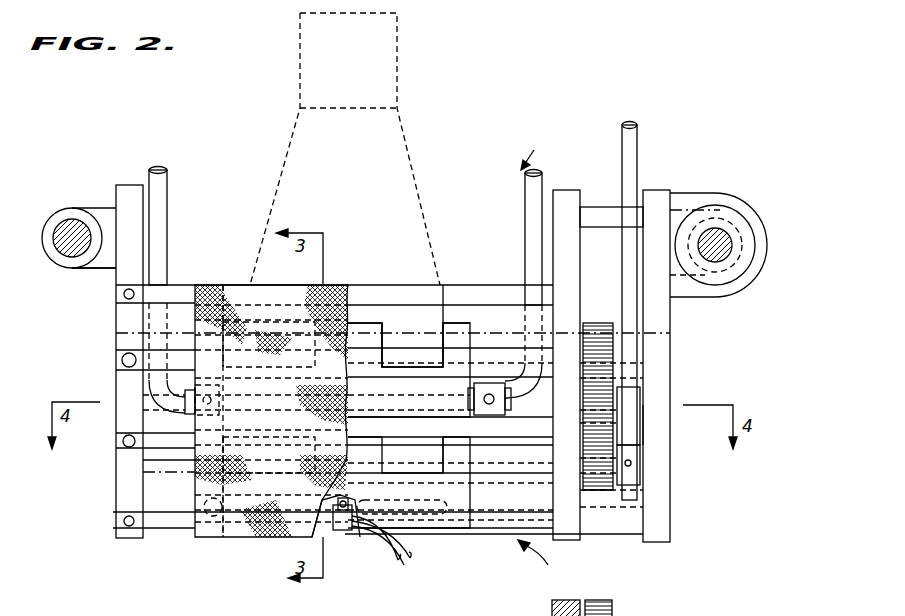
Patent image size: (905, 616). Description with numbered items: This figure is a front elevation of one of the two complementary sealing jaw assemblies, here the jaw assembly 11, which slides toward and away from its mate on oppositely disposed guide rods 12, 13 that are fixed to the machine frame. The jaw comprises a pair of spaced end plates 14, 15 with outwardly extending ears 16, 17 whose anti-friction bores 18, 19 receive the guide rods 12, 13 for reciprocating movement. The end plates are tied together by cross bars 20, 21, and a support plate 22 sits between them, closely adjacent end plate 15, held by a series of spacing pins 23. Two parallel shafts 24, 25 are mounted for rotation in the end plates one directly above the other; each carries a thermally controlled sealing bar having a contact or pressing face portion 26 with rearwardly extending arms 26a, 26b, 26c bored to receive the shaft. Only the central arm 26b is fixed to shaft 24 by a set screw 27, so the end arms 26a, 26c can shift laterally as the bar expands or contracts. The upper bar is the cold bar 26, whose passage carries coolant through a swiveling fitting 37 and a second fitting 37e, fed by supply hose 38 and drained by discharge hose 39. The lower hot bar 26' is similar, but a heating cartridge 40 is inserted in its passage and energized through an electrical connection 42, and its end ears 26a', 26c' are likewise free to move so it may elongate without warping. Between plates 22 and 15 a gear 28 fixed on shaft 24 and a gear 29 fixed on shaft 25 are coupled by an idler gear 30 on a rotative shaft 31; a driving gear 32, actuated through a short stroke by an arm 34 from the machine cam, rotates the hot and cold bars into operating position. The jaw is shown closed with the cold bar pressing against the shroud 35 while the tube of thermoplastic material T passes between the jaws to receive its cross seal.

The jaw assembly 11 is at (540, 563).
The guide rod 12 is at (70, 256).
The guide rod 13 is at (712, 260).
The end plate 14 is at (131, 190).
The end plate 15 is at (668, 498).
The ear 16 is at (106, 218).
The ear 17 is at (680, 200).
The anti-friction bore 18 is at (67, 226).
The anti-friction bore 19 is at (730, 252).
The cross bar 20 is at (124, 366).
The cross bar 21 is at (126, 435).
The support plate 22 is at (575, 195).
The spacing pin 23 is at (603, 228).
The shaft 24 is at (176, 338).
The shaft 25 is at (140, 461).
The cold bar contact face portion 26 is at (409, 379).
The hot bar 26' is at (410, 512).
The arm 26a is at (239, 304).
The end ear 26a' is at (184, 487).
The central arm 26b is at (360, 285).
The arm 26c is at (462, 306).
The end ear 26c' is at (476, 469).
The set screw 27 is at (382, 285).
The gear 28 is at (595, 322).
The gear 29 is at (605, 492).
The idler gear 30 is at (622, 400).
The rotative shaft 31 is at (650, 412).
The driving gear 32 is at (610, 612).
The arm 34 is at (640, 167).
The shroud 35 is at (200, 285).
The swiveling fitting 37 is at (506, 408).
The sensor 37e is at (190, 412).
The supply hose 38 is at (527, 255).
The discharge hose 39 is at (168, 200).
The heating cartridge 40 is at (213, 516).
The connection 42 is at (408, 570).
The tank T is at (404, 136).